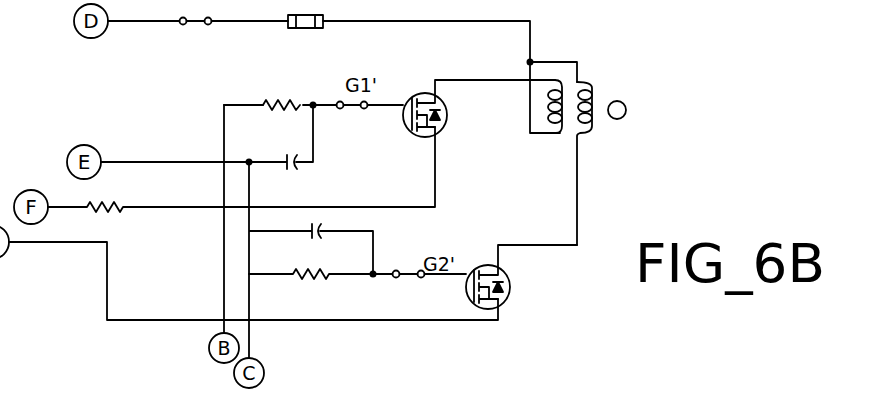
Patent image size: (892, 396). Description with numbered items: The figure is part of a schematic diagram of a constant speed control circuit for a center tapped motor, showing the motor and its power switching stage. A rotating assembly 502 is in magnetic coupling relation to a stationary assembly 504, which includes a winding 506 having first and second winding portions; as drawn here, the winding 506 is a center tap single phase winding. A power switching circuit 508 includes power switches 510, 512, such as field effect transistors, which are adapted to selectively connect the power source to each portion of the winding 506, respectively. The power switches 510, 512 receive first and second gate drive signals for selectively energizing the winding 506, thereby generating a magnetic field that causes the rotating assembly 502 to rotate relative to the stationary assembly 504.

The rotating assembly 502 is at (624, 103).
The stationary assembly 504 is at (602, 128).
The winding 506 is at (558, 132).
The power switching circuit 508 is at (520, 298).
The power switch 510 is at (415, 95).
The power switch 512 is at (532, 272).